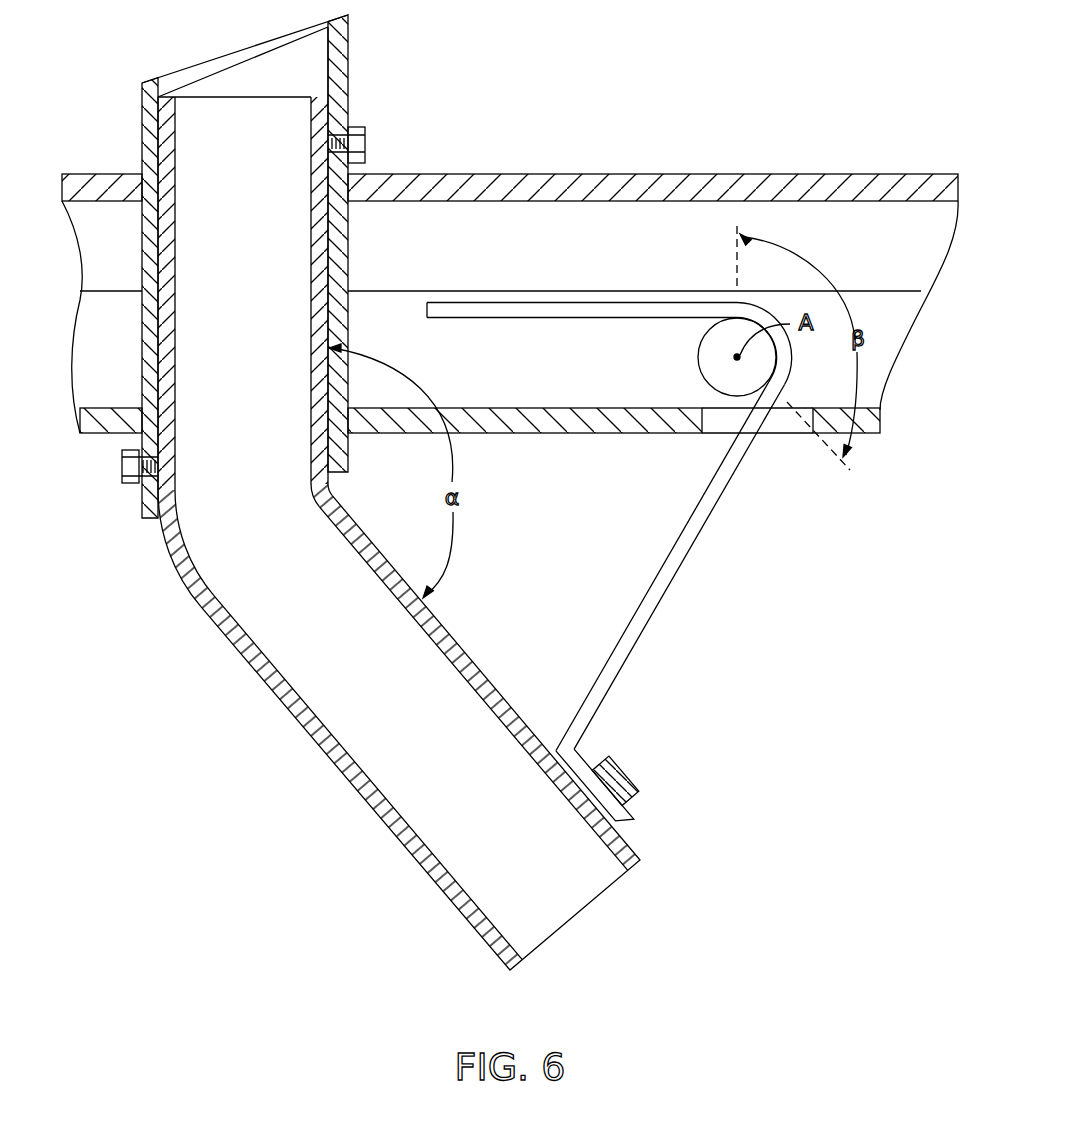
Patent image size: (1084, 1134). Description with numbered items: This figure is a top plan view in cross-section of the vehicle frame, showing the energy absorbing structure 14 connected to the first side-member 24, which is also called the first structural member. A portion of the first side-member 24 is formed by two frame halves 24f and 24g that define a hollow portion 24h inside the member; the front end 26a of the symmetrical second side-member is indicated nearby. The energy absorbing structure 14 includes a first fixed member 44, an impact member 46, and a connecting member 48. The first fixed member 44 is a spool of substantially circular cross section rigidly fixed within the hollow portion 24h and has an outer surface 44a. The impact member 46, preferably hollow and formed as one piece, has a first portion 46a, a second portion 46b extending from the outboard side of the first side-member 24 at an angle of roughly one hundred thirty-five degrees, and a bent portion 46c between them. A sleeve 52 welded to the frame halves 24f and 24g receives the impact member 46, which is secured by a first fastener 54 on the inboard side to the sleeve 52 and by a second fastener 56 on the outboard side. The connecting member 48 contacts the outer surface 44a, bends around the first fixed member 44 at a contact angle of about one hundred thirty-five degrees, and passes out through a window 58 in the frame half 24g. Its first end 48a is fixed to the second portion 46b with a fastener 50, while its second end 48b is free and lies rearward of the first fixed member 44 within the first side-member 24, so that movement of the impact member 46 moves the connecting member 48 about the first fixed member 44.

The energy absorbing structure 14 is at (399, 498).
The first side-member 24 is at (501, 315).
The frame half 24f is at (112, 174).
The frame half 24g is at (98, 436).
The hollow portion 24h is at (611, 242).
The front end 26a is at (196, 266).
The first fixed member 44 is at (691, 357).
The outer surface 44a is at (698, 351).
The impact member 46 is at (399, 498).
The first portion 46a is at (329, 240).
The second portion 46b is at (342, 775).
The bent portion 46c is at (334, 498).
The connecting member 48 is at (586, 540).
The first end 48a is at (636, 818).
The second end 48b is at (427, 308).
The fastener 50 is at (612, 758).
The sleeve 52 is at (142, 258).
The first fastener 54 is at (360, 127).
The second fastener 56 is at (132, 484).
The window 58 is at (704, 436).